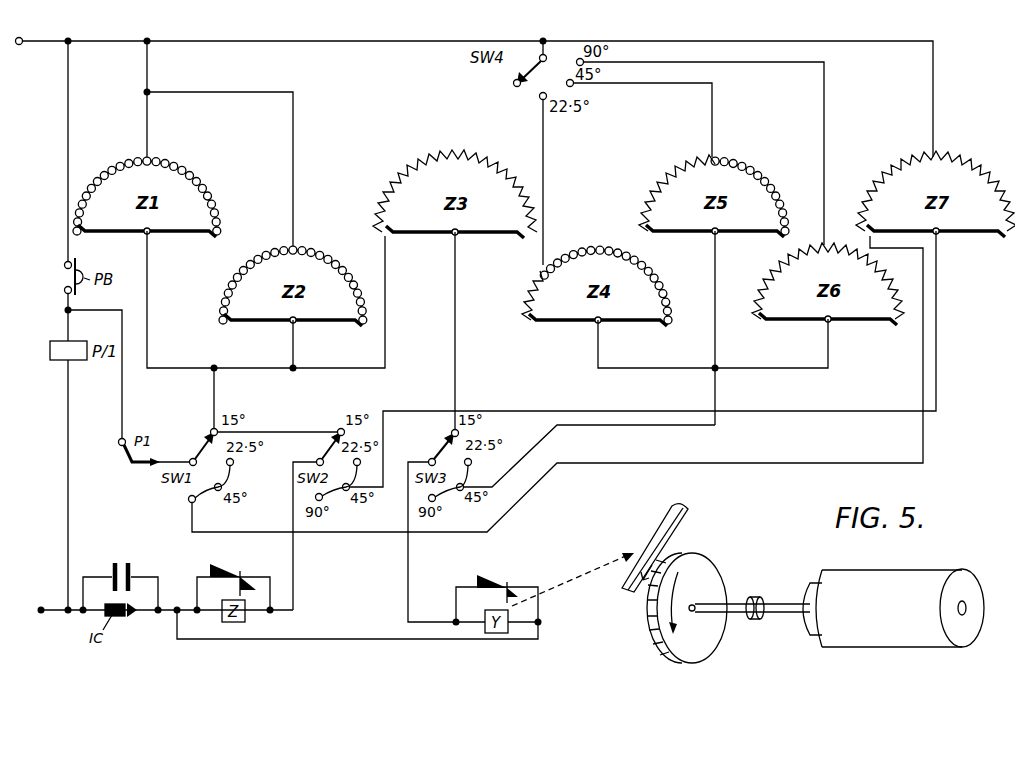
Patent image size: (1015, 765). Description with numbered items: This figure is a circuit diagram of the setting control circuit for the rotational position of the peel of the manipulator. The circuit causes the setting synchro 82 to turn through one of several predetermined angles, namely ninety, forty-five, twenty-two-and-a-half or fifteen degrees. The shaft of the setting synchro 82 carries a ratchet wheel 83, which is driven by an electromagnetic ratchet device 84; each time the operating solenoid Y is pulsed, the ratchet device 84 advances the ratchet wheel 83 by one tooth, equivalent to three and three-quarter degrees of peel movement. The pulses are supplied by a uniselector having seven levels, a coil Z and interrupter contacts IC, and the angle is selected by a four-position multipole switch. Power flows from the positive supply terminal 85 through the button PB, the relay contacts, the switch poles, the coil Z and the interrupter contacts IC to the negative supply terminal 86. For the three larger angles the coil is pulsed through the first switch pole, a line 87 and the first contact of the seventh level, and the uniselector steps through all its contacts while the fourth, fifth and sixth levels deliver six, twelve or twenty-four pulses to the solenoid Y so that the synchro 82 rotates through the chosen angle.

The setting synchro 82 is at (827, 575).
The ratchet wheel 83 is at (718, 567).
The electromagnetic ratchet device 84 is at (687, 523).
The positive supply terminal 85 is at (21, 44).
The negative supply terminal 86 is at (41, 607).
The line 87 is at (596, 428).